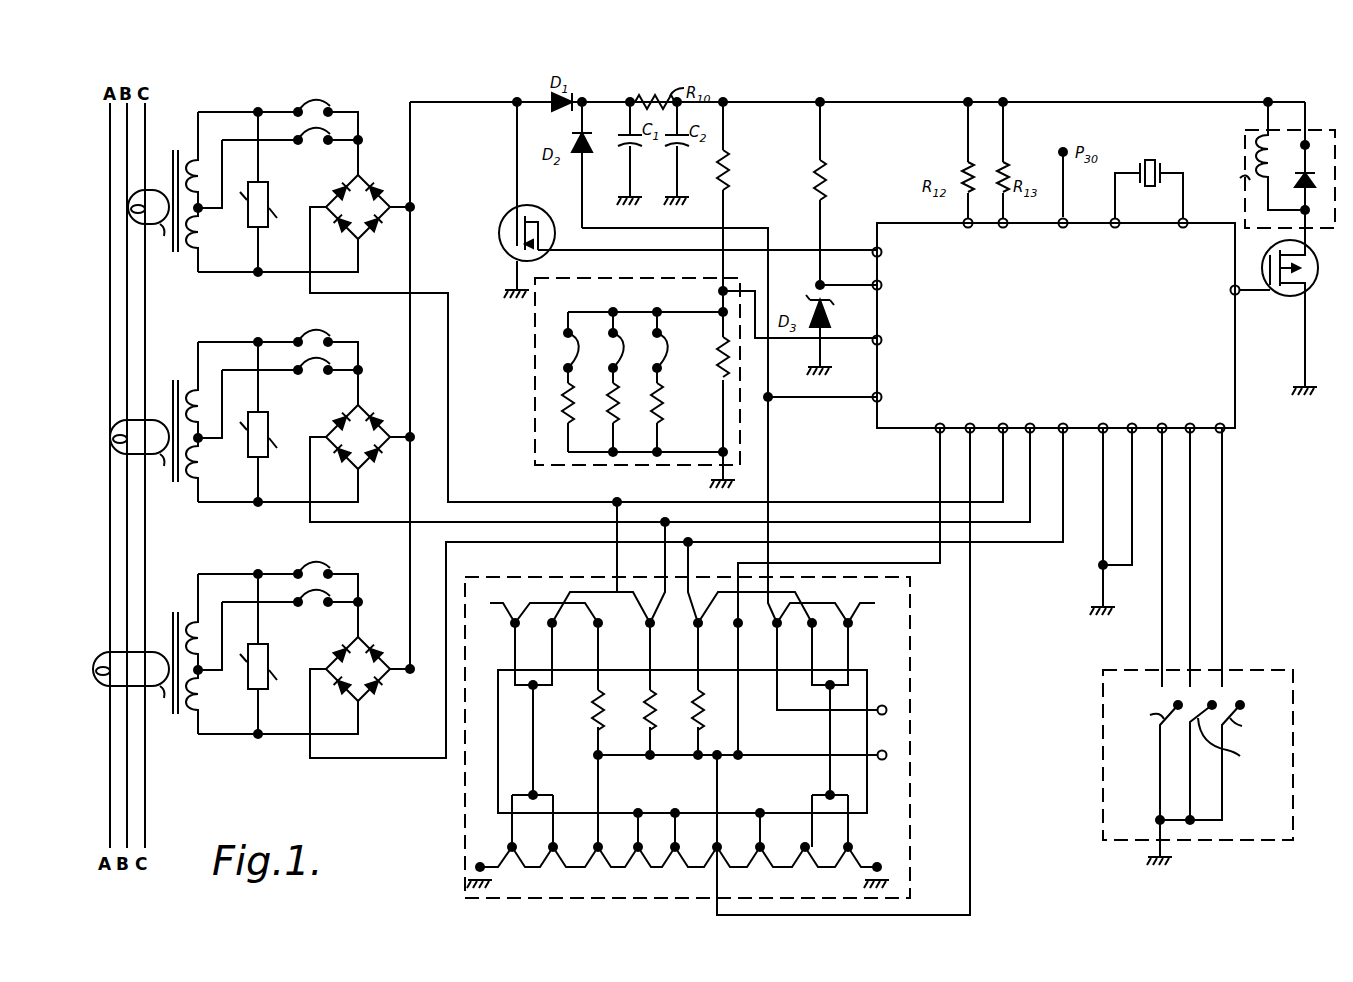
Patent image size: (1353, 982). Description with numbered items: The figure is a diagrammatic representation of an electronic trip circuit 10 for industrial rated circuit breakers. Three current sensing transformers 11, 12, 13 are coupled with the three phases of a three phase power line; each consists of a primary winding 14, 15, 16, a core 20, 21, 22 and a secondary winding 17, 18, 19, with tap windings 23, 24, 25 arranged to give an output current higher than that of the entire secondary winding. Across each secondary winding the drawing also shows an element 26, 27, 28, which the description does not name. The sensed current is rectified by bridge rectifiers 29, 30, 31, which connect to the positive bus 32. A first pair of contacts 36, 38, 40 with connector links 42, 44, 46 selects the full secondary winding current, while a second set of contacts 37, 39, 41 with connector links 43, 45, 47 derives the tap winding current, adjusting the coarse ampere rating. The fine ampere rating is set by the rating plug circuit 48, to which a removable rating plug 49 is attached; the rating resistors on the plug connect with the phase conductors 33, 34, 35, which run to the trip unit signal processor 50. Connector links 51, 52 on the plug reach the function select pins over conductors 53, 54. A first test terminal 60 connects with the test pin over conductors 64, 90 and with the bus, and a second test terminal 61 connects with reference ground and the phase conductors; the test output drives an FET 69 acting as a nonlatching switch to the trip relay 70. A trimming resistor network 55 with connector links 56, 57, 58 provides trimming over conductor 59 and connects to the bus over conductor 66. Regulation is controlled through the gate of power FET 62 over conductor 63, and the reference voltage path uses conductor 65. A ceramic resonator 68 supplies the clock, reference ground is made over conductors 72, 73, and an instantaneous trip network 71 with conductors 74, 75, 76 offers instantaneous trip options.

The electronic trip circuit 10 is at (1268, 908).
The current sensing transformer 11 is at (179, 132).
The current sensing transformer 12 is at (181, 360).
The current sensing transformer 13 is at (179, 586).
The primary winding 14 is at (152, 229).
The primary winding 15 is at (143, 454).
The primary winding 16 is at (133, 685).
The secondary winding 17 is at (196, 270).
The secondary winding 18 is at (196, 500).
The secondary winding 19 is at (196, 732).
The core 20 is at (174, 158).
The core 21 is at (174, 388).
The core 22 is at (174, 620).
The tap winding 23 is at (202, 226).
The tap winding 24 is at (202, 466).
The tap winding 25 is at (202, 696).
The varistor 26 is at (270, 206).
The varistor 27 is at (270, 426).
The varistor 28 is at (268, 664).
The bridge rectifier 29 is at (368, 215).
The bridge rectifier 30 is at (368, 445).
The bridge rectifier 31 is at (368, 677).
The positive bus 32 is at (414, 252).
The phase conductor 33 is at (364, 292).
The phase conductor 34 is at (364, 524).
The phase conductor 35 is at (372, 758).
The first pair contact 36 is at (344, 106).
The second set contact 37 is at (364, 130).
The first pair contact 38 is at (352, 336).
The second set contact 39 is at (364, 362).
The first pair contact 40 is at (352, 566).
The second set contact 41 is at (364, 594).
The connector link 42 is at (309, 98).
The connector link 43 is at (306, 137).
The connector link 44 is at (309, 331).
The connector link 45 is at (306, 367).
The connector link 46 is at (309, 559).
The connector link 47 is at (306, 598).
The rating plug circuit 48 is at (712, 697).
The rating plug 49 is at (494, 740).
The trip unit signal processor 50 is at (1200, 335).
The connector link 51 is at (740, 695).
The connector link 52 is at (718, 760).
The conductor 53 is at (972, 658).
The conductor 54 is at (921, 570).
The trimming resistor network 55 is at (650, 307).
The connector link 56 is at (580, 348).
The connector link 57 is at (625, 348).
The connector link 58 is at (666, 356).
The conductor 59 is at (758, 340).
The first test terminal 60 is at (905, 698).
The second test terminal 61 is at (888, 760).
The power FET 62 is at (535, 205).
The conductor 63 is at (778, 251).
The conductor 64 is at (660, 232).
The conductor 65 is at (822, 139).
The conductor 66 is at (734, 135).
The ceramic resonator 68 is at (1152, 158).
The FET 69 is at (1310, 290).
The trip relay 70 is at (1308, 142).
The instantaneous trip network 71 is at (1103, 828).
The conductor 72 is at (1103, 490).
The conductor 73 is at (1132, 494).
The conductor 74 is at (1162, 570).
The conductor 75 is at (1190, 570).
The conductor 76 is at (1222, 570).
The conductor 90 is at (780, 408).